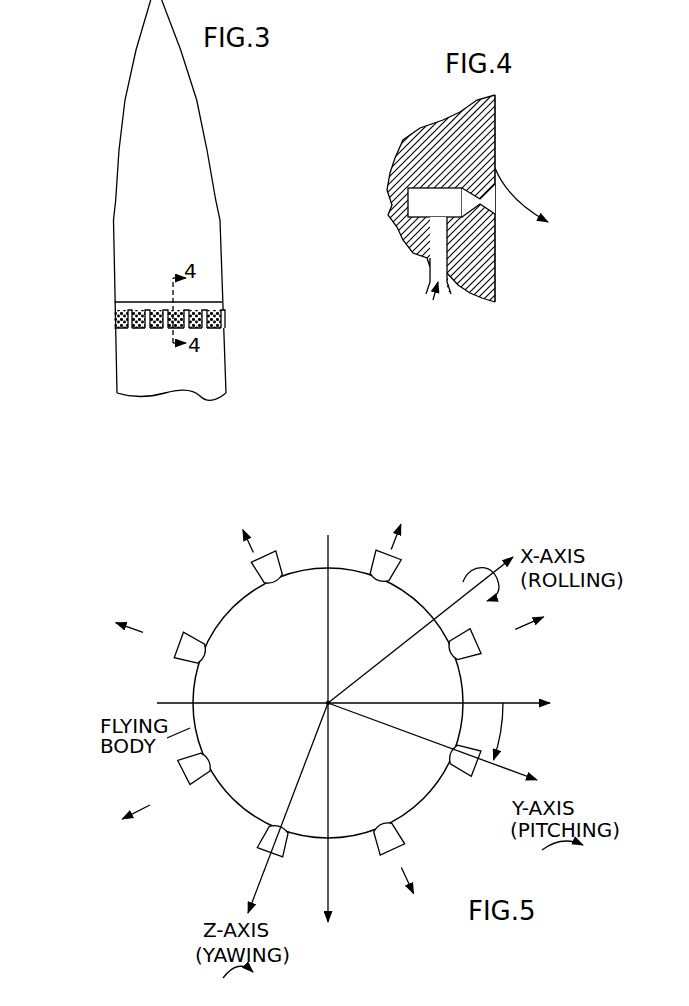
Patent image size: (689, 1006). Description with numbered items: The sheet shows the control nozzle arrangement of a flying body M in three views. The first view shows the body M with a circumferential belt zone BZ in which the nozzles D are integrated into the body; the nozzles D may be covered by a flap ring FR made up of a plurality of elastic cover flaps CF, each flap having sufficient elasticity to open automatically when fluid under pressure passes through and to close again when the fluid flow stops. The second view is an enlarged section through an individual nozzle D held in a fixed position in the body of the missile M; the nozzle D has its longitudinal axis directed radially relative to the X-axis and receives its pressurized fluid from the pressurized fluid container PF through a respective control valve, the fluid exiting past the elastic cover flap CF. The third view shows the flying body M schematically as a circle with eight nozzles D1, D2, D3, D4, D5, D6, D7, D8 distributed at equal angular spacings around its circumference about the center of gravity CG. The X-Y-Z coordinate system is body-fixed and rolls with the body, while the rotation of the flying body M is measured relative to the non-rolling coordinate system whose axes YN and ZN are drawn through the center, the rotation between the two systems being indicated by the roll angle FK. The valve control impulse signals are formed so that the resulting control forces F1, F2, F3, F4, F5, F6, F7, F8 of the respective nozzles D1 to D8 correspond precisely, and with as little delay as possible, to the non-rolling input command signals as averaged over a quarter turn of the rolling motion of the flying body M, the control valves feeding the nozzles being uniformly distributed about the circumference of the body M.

In FIG. 3, the flying body M is at (132, 170).
In FIG. 4, the flying body M is at (415, 153).
In FIG. 5, the flying body M is at (222, 792).
In FIG. 3, the nozzle D is at (151, 330).
In FIG. 4, the nozzle D is at (438, 200).
In FIG. 3, the belt zone BZ is at (113, 318).
In FIG. 3, the flap ring FR is at (213, 306).
In FIG. 4, the elastic cover flap CF is at (524, 199).
In FIG. 4, the pressurized fluid container PF is at (461, 317).
In FIG. 5, the center of gravity CG is at (326, 701).
In FIG. 5, the non-rolling Y axis YN is at (354, 687).
In FIG. 5, the non-rolling Z axis ZN is at (347, 731).
In FIG. 5, the roll angle FK is at (519, 731).
In FIG. 5, the first control nozzle D1 is at (450, 762).
In FIG. 5, the second control nozzle D2 is at (393, 852).
In FIG. 5, the third control nozzle D3 is at (258, 838).
In FIG. 5, the fourth control nozzle D4 is at (188, 786).
In FIG. 5, the fifth control nozzle D5 is at (182, 662).
In FIG. 5, the sixth control nozzle D6 is at (252, 560).
In FIG. 5, the seventh control nozzle D7 is at (399, 569).
In FIG. 5, the eighth control nozzle D8 is at (478, 647).
In FIG. 5, the control force F1 is at (541, 778).
In FIG. 5, the control force F2 is at (426, 885).
In FIG. 5, the control force F3 is at (263, 889).
In FIG. 5, the control force F4 is at (140, 796).
In FIG. 5, the control force F5 is at (143, 632).
In FIG. 5, the control force F6 is at (253, 553).
In FIG. 5, the control force F7 is at (388, 548).
In FIG. 5, the control force F8 is at (521, 619).